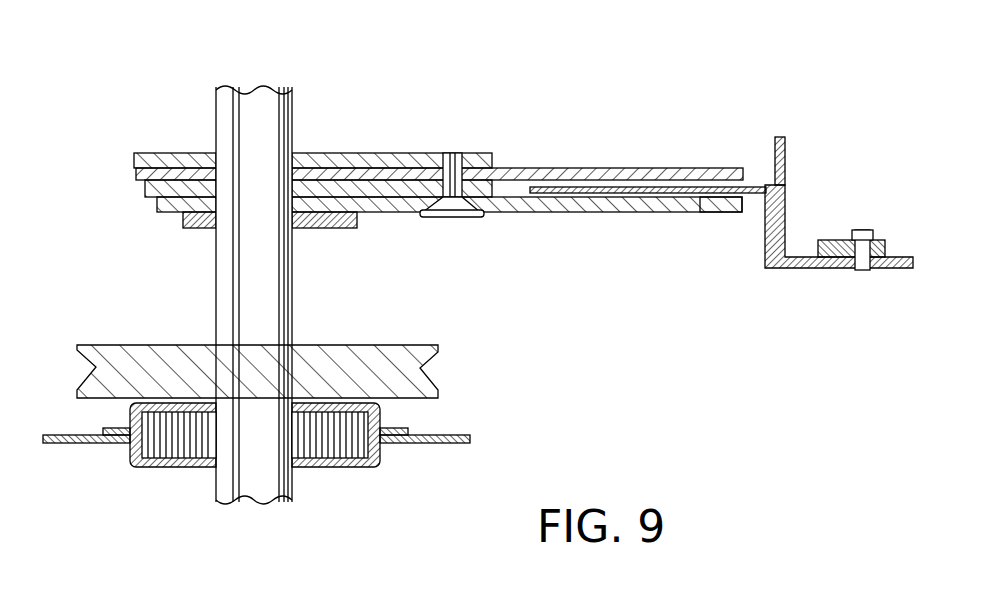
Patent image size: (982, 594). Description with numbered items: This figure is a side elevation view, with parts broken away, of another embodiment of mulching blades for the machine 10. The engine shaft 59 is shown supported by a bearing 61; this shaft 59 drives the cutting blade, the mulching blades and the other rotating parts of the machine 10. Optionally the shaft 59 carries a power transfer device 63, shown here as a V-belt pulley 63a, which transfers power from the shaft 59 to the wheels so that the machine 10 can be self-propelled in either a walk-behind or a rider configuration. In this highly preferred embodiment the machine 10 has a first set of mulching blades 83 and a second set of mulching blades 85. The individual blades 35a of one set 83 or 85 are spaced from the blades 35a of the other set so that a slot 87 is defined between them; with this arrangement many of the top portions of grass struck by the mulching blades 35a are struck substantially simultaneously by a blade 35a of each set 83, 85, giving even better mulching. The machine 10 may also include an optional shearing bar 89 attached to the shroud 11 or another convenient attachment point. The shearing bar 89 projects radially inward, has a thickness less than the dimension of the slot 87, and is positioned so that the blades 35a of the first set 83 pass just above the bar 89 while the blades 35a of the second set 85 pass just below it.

The machine 10 is at (40, 0).
The shroud 11 is at (797, 250).
The mulching blades 35a is at (622, 167).
The shaft 59 is at (285, 488).
The bearing 61 is at (180, 468).
The power transfer device 63 is at (424, 408).
The V-belt pulley 63a is at (440, 392).
The first set of mulching blades 83 is at (543, 167).
The second set of mulching blades 85 is at (562, 212).
The slot 87 is at (513, 195).
The shearing bar 89 is at (724, 212).